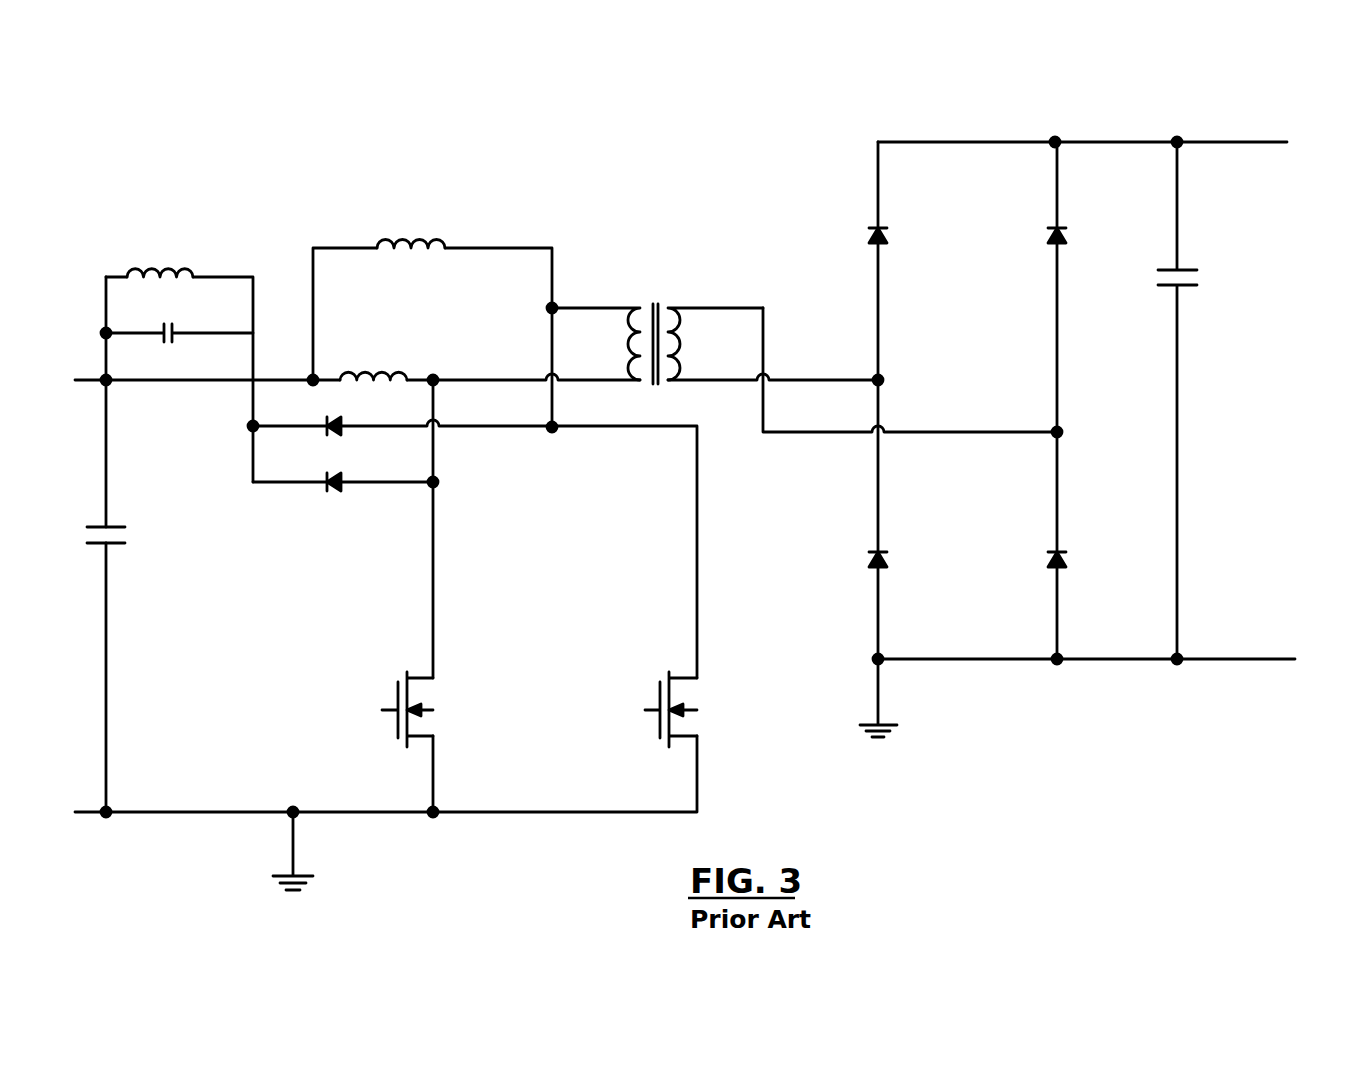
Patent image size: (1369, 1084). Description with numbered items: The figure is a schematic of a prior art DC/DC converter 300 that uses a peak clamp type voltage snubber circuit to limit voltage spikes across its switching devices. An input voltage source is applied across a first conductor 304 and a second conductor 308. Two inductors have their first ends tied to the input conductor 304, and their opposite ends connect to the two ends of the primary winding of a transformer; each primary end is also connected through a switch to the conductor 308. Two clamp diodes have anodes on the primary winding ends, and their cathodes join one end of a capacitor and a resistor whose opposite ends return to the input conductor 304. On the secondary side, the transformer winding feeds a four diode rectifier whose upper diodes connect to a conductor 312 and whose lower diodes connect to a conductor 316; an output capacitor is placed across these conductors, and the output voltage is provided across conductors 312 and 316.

The DC/DC converter 300 is at (700, 469).
The input conductor 304 is at (148, 381).
The conductor 308 is at (130, 812).
The conductor 312 is at (1087, 142).
The conductor 316 is at (1065, 661).